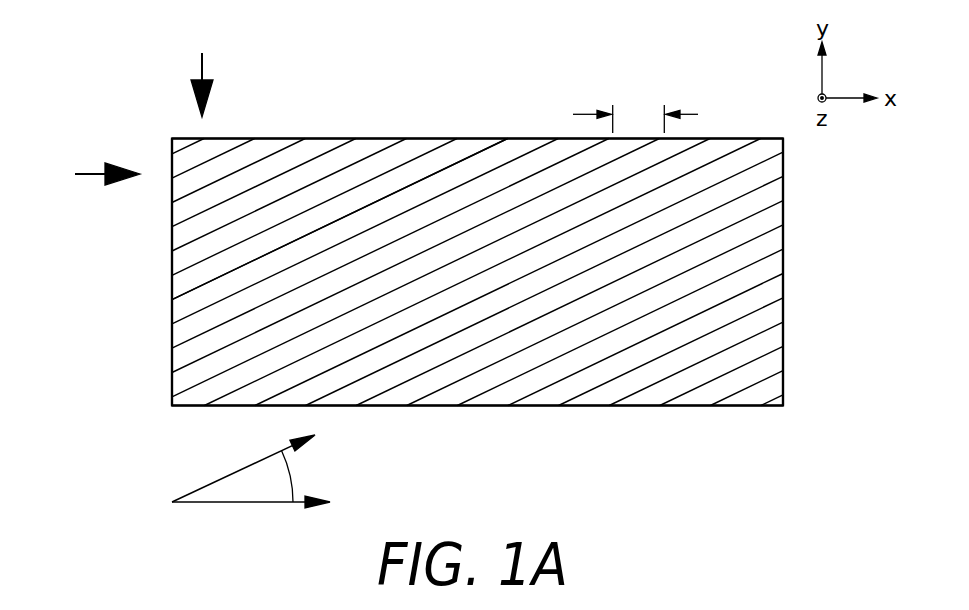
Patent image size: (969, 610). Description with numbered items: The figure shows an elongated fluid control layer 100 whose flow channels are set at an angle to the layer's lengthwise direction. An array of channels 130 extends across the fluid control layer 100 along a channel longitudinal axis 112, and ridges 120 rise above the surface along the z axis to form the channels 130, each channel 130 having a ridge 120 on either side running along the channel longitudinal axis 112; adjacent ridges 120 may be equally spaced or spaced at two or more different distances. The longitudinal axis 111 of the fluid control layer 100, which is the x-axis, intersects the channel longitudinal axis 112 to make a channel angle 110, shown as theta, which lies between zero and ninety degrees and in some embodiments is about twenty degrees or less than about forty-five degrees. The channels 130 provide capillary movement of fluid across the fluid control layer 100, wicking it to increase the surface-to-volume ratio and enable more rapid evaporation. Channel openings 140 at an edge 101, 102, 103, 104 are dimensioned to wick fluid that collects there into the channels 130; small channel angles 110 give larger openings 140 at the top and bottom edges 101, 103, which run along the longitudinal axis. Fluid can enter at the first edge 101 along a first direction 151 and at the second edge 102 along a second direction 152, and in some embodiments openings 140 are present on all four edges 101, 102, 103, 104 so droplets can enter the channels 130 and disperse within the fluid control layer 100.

The fluid control layer 100 is at (150, 66).
The first edge 101 is at (323, 138).
The second edge 102 is at (171, 285).
The bottom edge 103 is at (685, 408).
The edge 104 is at (784, 268).
The channel angle 110 is at (303, 475).
The longitudinal axis 111 is at (248, 505).
The channel longitudinal axis 112 is at (233, 471).
The ridges 120 is at (513, 185).
The channels 130 is at (414, 200).
The channel openings 140 is at (658, 117).
The first direction 151 is at (204, 60).
The second direction 152 is at (92, 174).